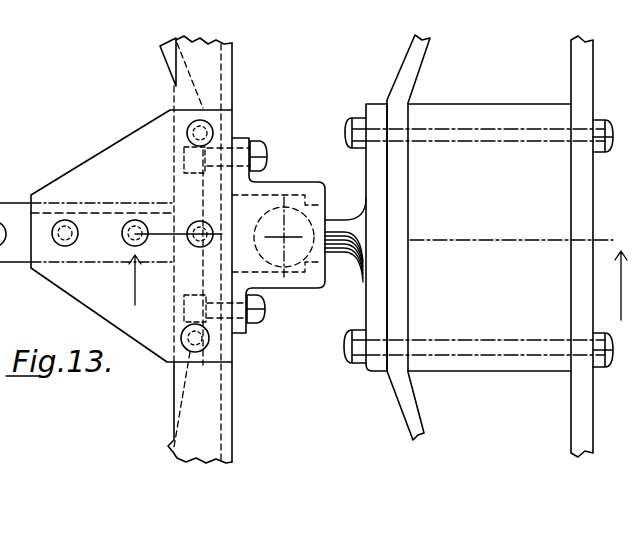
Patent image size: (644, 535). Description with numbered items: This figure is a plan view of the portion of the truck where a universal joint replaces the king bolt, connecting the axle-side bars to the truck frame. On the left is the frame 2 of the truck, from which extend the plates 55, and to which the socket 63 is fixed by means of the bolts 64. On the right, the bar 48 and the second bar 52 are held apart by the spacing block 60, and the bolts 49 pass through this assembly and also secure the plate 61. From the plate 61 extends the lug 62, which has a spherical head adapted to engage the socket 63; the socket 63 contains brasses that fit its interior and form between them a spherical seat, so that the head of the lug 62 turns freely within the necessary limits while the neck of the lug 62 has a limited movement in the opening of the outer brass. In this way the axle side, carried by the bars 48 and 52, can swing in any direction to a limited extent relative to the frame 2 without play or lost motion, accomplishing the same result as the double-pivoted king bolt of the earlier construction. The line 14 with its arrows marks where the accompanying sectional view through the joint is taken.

The frame 2 is at (182, 455).
The section line 14— 14 is at (359, 266).
The bar 48 is at (580, 80).
The bolts 49 is at (355, 118).
The second bar 52 is at (418, 54).
The plates 55 is at (116, 236).
The spacing block 60 is at (510, 237).
The plate 61 is at (373, 311).
The lug 62 is at (336, 218).
The socket 63 is at (295, 185).
The bolts 64 is at (258, 140).